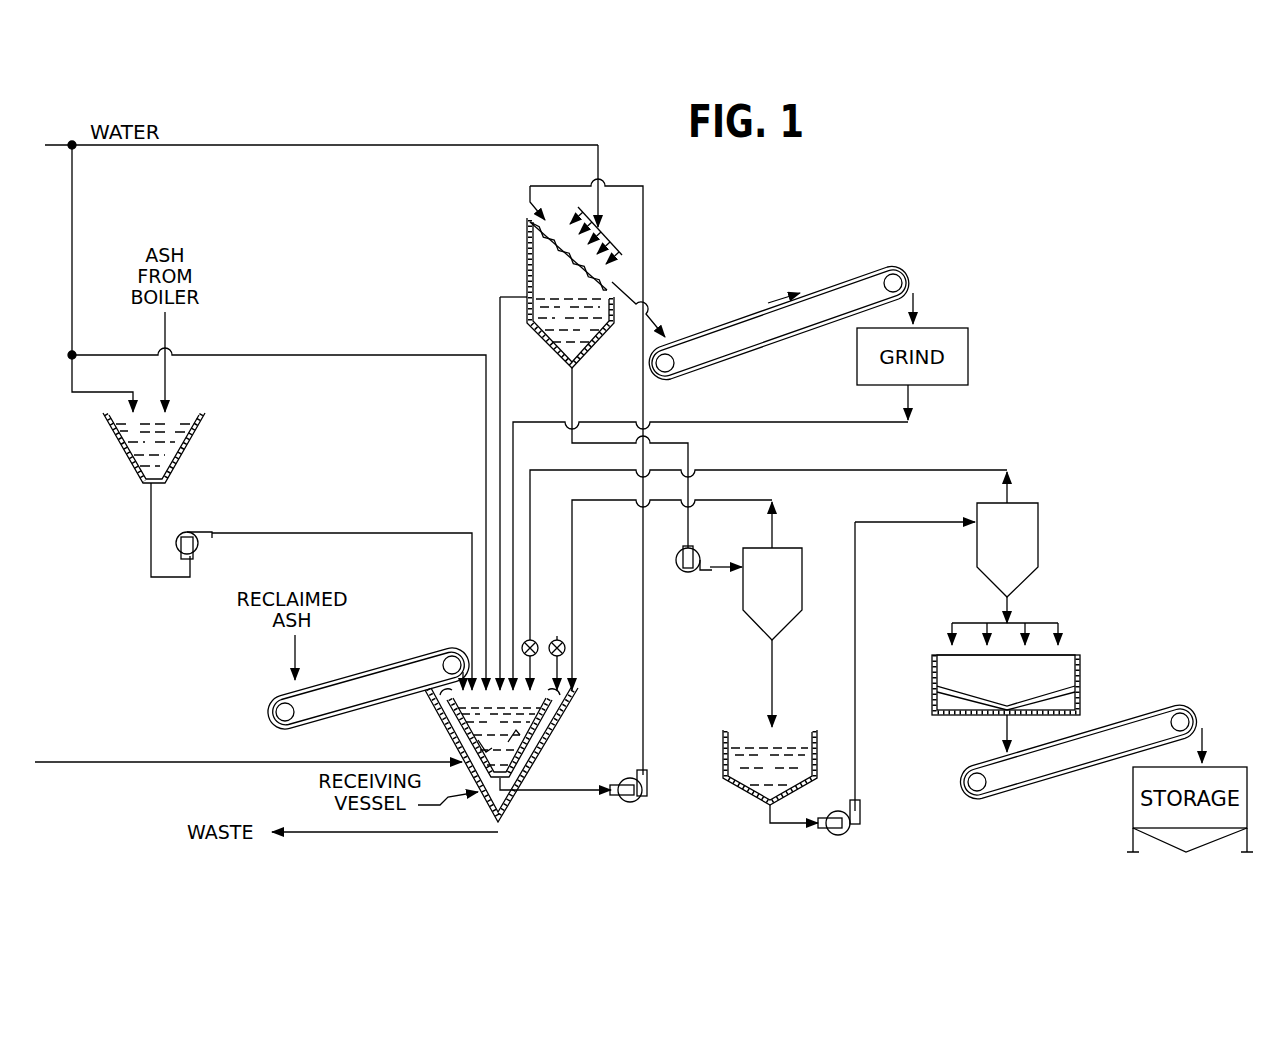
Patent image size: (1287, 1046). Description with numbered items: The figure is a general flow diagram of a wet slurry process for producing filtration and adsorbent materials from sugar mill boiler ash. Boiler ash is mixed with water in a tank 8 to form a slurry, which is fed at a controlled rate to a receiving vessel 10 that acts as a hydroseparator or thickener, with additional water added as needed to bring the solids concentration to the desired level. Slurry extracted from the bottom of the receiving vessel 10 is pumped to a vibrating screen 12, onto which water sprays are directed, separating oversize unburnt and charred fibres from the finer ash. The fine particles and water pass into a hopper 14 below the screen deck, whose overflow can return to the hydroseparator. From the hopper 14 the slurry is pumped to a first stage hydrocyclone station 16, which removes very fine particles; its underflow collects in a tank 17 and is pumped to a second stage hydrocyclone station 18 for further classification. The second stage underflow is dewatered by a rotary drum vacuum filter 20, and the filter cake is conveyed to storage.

The tank 8 is at (199, 445).
The receiving vessel 10 is at (447, 720).
The vibrating screen 12 is at (612, 276).
The hopper 14 is at (585, 357).
The first stage hydrocyclone station 16 is at (743, 598).
The tank 17 is at (723, 757).
The second stage hydrocyclone station 18 is at (1040, 531).
The rotary drum vacuum filter 20 is at (1083, 690).